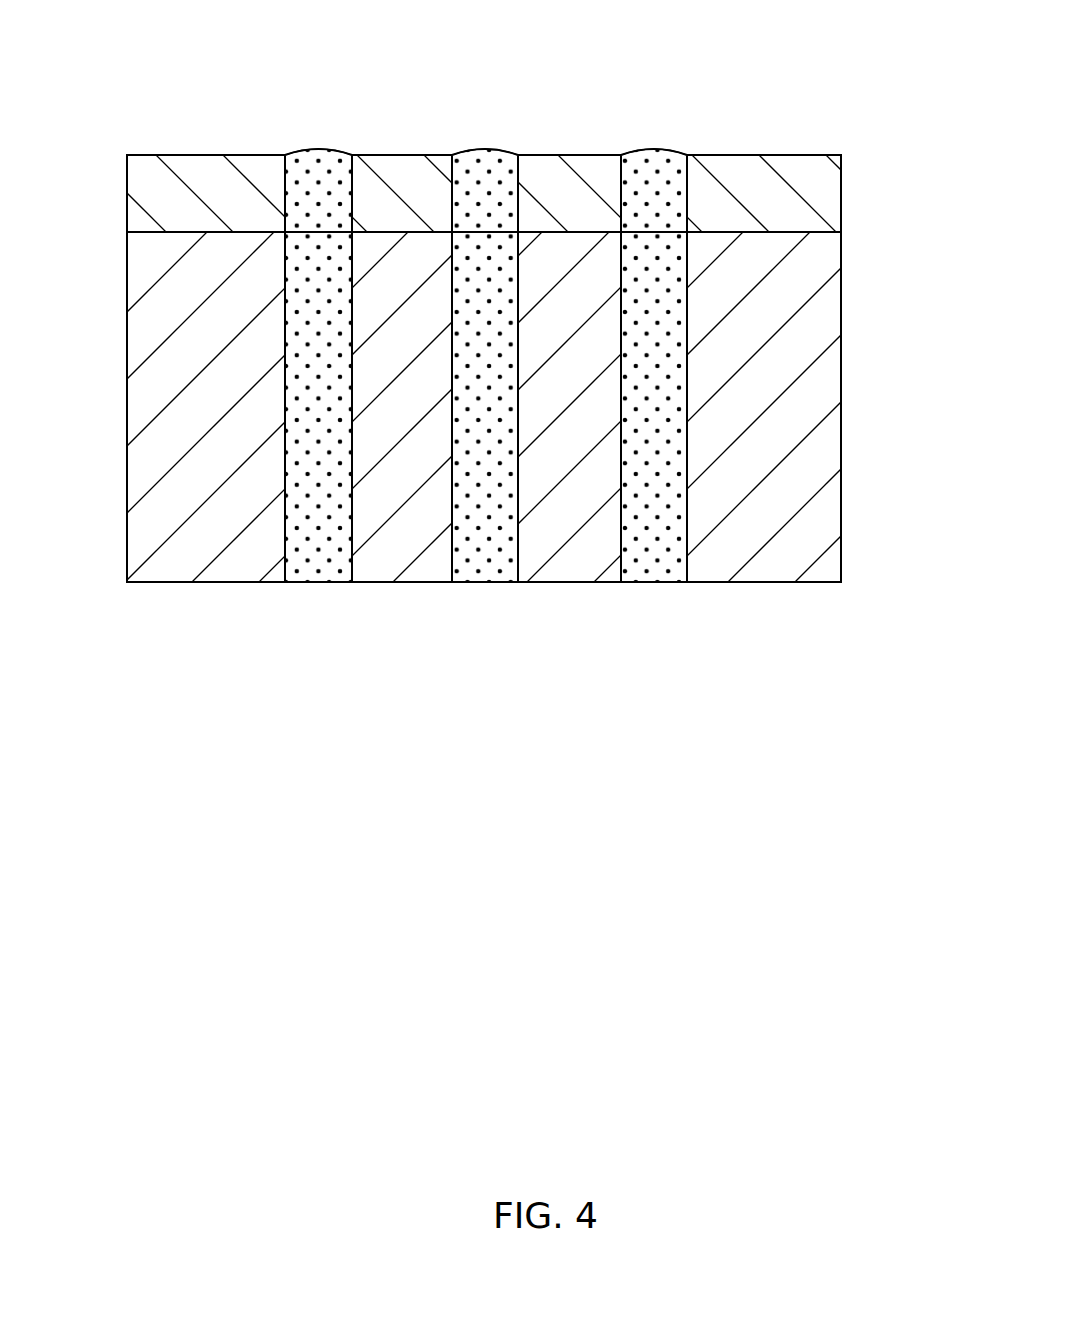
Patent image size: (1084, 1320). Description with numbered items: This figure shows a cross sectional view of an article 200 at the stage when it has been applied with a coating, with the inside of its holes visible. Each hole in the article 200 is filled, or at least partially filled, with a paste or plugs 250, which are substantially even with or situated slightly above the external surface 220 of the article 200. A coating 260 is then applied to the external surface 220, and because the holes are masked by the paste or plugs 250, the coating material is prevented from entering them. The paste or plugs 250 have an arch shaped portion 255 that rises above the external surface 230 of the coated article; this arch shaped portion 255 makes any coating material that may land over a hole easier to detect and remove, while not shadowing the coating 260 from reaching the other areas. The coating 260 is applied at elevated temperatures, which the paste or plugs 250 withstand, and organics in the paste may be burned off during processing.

The article 200 is at (542, 295).
The external surface 220 is at (753, 233).
The external surface of the coated article 230 is at (515, 167).
The paste or plugs 250 is at (487, 303).
The arch shaped portion 255 is at (318, 152).
The coating 260 is at (827, 207).